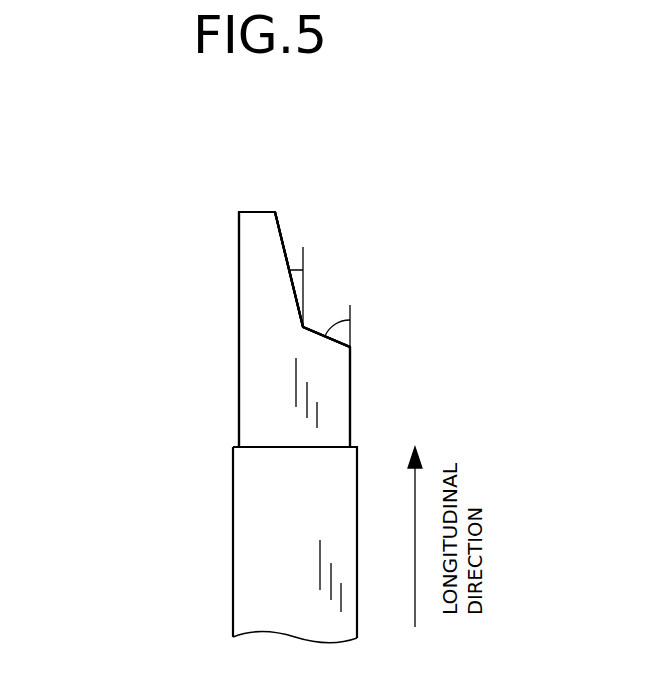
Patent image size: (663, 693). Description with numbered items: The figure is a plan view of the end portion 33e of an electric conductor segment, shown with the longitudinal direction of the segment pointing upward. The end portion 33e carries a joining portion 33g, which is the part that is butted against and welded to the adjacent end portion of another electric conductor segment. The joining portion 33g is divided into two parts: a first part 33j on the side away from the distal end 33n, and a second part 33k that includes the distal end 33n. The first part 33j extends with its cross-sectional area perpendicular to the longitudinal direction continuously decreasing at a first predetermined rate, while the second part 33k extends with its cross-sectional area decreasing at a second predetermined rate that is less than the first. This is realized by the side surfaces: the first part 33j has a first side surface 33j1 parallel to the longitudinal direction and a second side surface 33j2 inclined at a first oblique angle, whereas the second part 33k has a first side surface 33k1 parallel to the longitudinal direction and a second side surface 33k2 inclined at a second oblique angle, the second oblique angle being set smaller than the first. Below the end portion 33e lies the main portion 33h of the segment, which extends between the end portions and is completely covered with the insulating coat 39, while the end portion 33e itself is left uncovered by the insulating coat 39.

The joining portion 33g is at (102, 247).
The second part 33k is at (303, 327).
The first part 33j is at (350, 347).
The first side surface of the second part 33k1 is at (238, 232).
The second side surface of the second part 33k2 is at (281, 218).
The distal end 33n is at (255, 211).
The first side surface of the first part 33j1 is at (238, 336).
The second side surface of the first part 33j2 is at (312, 330).
The end portion 33e is at (275, 393).
The main portion 33h is at (185, 500).
The insulating coat 39 is at (277, 555).